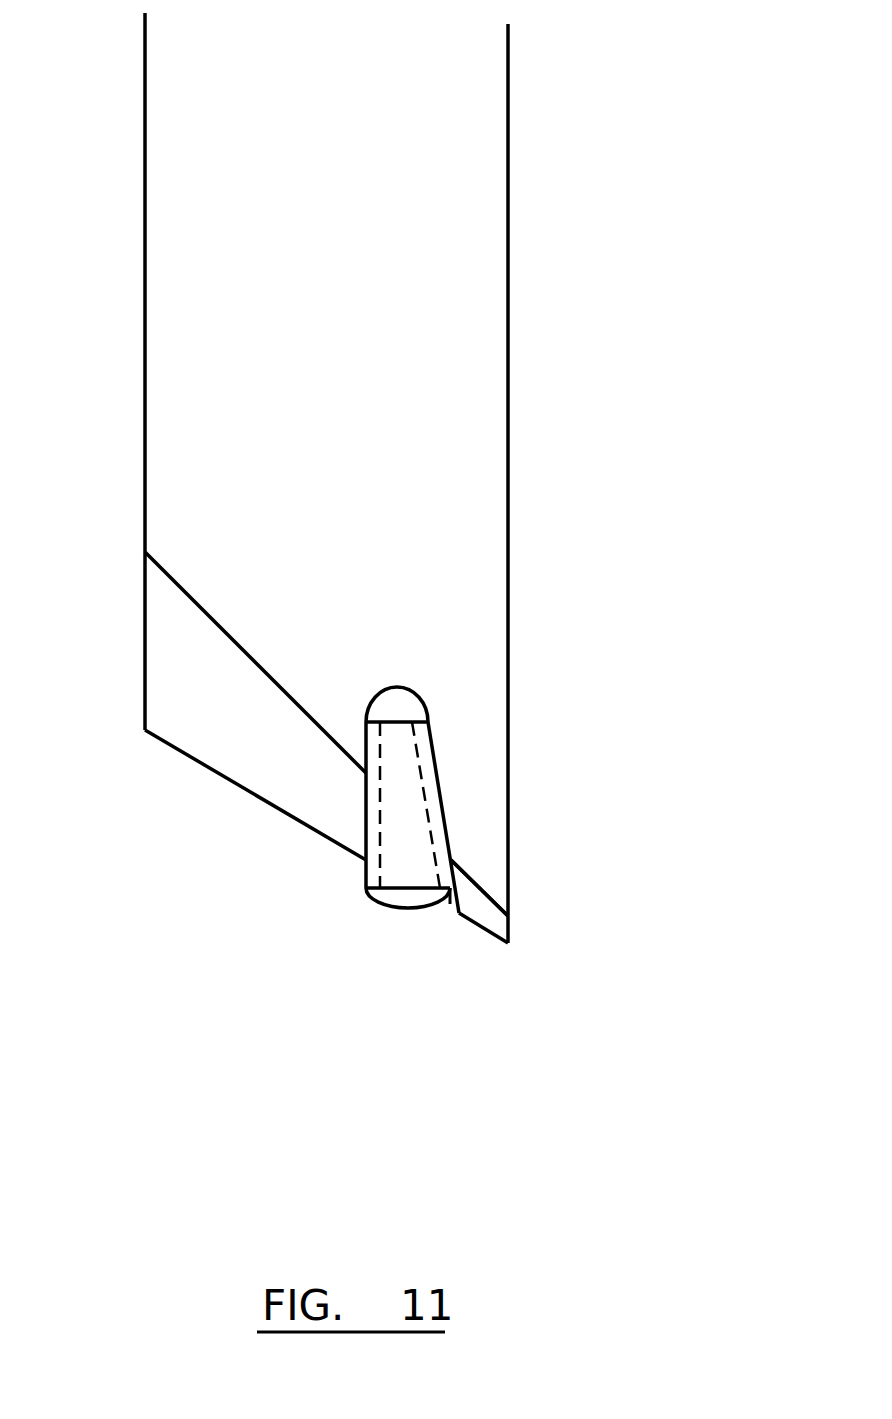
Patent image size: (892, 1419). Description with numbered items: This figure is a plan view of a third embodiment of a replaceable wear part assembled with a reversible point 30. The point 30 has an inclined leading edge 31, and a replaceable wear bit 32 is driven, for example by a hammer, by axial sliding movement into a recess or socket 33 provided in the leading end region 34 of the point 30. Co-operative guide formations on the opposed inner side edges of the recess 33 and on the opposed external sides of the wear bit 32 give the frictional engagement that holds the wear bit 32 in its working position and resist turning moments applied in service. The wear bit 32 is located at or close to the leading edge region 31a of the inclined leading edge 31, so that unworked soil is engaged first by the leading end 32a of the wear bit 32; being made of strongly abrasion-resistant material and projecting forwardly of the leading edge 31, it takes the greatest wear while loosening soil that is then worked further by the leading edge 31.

The reversible point 30 is at (440, 376).
The inclined leading edge 31 is at (270, 765).
The leading edge region 31a is at (487, 920).
The replaceable wear bit 32 is at (410, 815).
The leading end 32a is at (415, 910).
The recess or socket 33 is at (427, 748).
The leading end region 34 is at (488, 860).